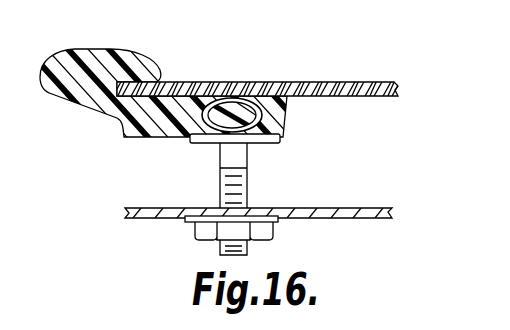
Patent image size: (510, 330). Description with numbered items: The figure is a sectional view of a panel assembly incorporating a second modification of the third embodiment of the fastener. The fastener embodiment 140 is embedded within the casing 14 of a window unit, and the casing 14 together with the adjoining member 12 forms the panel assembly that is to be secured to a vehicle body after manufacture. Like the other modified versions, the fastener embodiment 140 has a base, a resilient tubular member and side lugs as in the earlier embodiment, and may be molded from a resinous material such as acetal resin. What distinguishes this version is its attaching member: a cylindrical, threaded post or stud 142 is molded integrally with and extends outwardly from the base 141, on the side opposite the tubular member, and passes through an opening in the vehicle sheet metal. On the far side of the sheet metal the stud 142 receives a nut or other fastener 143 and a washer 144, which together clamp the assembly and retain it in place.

The casing 14 is at (113, 61).
The mounting strip 12 is at (321, 82).
The fastener embodiment 140 is at (292, 178).
The base 141 is at (193, 144).
The threaded post or stud 142 is at (250, 154).
The nut 143 is at (265, 237).
The washer 144 is at (190, 222).